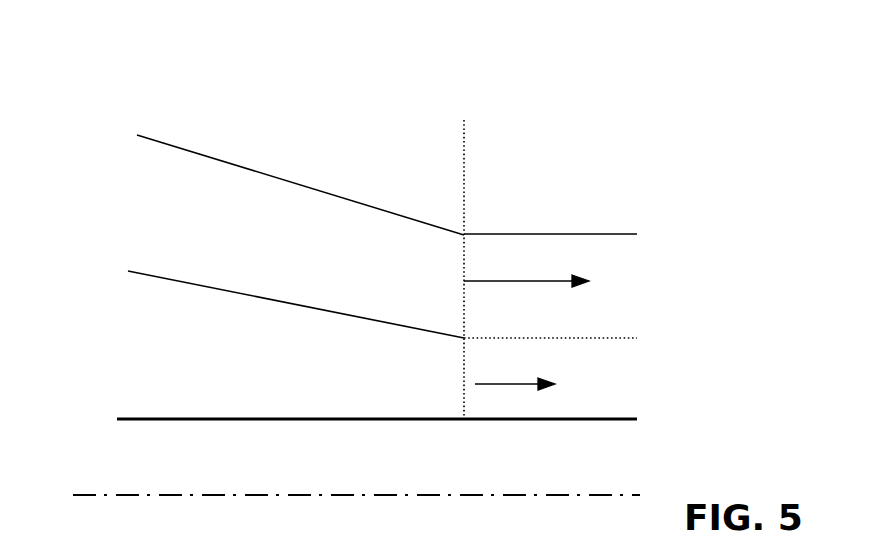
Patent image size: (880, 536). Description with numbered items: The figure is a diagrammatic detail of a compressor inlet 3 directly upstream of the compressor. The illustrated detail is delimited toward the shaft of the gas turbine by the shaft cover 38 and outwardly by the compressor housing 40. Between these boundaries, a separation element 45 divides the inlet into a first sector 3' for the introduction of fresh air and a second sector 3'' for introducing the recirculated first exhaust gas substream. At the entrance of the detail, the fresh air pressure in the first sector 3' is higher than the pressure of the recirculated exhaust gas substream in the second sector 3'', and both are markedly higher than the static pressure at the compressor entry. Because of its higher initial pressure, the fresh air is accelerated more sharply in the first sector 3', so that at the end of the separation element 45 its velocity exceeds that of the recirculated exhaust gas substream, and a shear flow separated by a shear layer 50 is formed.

The compressor inlet 3 is at (348, 375).
The first sector 3' is at (372, 173).
The second sector 3'' is at (376, 408).
The shaft cover 38 is at (205, 419).
The compressor housing 40 is at (192, 152).
The separation element 45 is at (220, 287).
The shear layer 50 is at (540, 338).